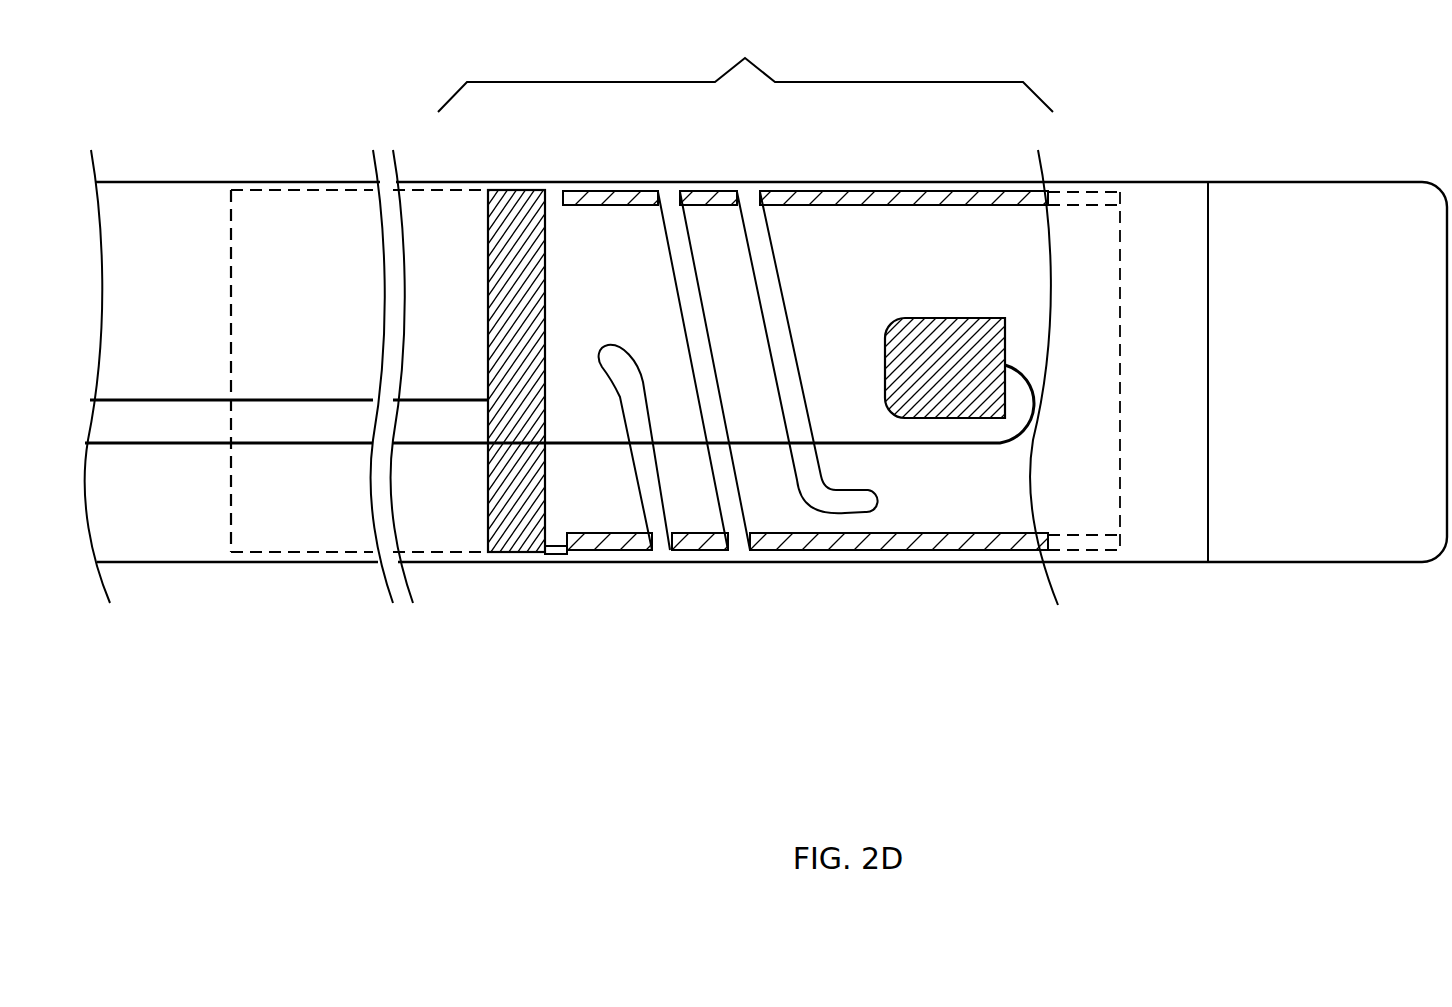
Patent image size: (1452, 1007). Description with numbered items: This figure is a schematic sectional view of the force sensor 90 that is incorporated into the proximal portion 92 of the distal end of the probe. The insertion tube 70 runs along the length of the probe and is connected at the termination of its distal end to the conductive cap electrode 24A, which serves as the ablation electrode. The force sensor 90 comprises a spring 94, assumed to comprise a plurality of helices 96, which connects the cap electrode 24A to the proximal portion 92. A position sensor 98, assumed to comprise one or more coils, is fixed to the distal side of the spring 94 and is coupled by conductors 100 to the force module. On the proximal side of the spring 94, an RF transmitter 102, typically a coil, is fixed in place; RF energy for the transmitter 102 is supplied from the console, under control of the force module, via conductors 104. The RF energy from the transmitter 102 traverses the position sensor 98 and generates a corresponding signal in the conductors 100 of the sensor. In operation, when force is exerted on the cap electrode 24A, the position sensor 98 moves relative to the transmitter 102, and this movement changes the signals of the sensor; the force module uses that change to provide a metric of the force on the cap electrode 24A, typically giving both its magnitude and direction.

The insertion tube 70 is at (147, 563).
The proximal portion 92 is at (231, 563).
The force sensor 90 is at (745, 69).
The spring 94 is at (963, 550).
The helices 96 is at (752, 196).
The position sensor 98 is at (942, 318).
The conductors 100 is at (307, 445).
The RF transmitter 102 is at (545, 310).
The conductors 104 is at (322, 398).
The conductive cap electrode 24A is at (1340, 563).